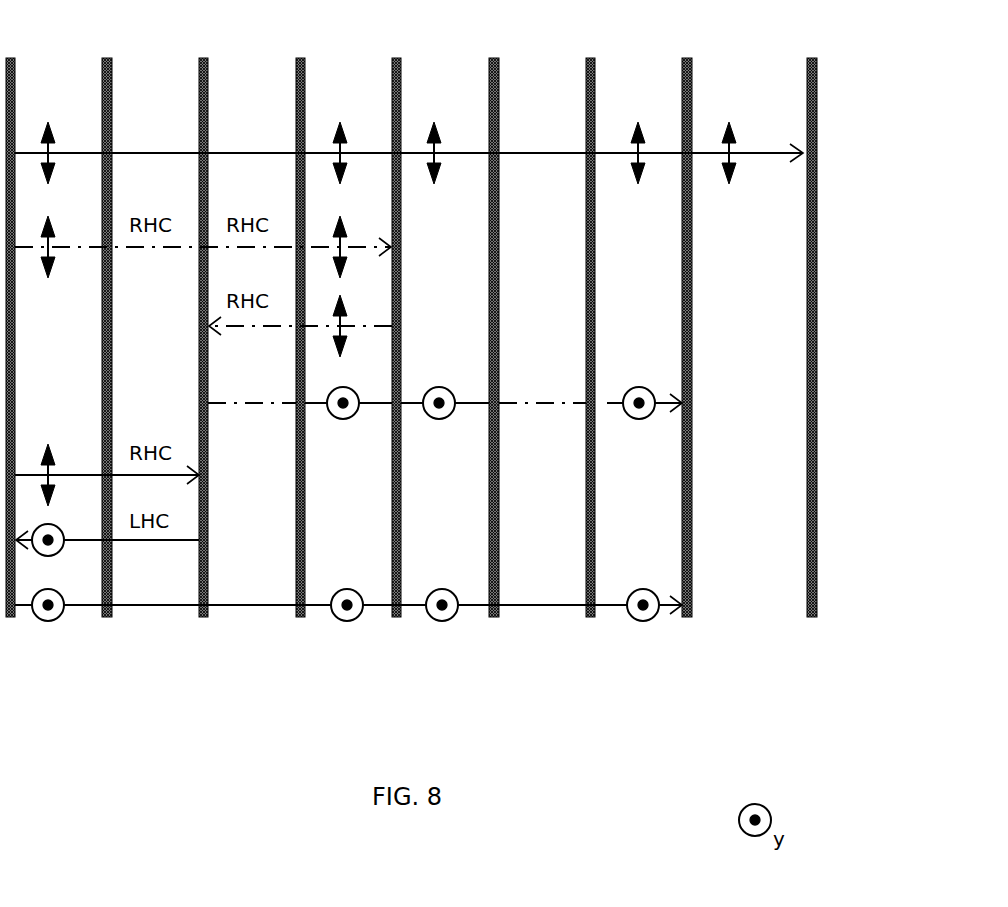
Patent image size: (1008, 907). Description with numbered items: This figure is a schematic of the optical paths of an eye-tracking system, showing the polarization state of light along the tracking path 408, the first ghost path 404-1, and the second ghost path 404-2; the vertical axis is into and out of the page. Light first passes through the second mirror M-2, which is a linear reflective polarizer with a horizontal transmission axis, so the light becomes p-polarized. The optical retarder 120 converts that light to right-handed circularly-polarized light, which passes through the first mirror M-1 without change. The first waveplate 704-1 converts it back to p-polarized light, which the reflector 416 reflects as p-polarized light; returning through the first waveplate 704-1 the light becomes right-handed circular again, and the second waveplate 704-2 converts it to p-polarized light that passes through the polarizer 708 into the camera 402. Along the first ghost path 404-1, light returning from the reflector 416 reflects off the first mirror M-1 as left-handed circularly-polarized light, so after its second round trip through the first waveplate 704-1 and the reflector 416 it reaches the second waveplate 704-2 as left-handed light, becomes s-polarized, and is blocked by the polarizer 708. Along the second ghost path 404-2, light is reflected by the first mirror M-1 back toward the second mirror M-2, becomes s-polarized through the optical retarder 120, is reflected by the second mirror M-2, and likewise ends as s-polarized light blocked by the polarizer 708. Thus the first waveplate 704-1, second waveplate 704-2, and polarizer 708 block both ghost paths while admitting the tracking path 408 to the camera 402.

The second mirror M-2 is at (14, 60).
The first mirror M-1 is at (206, 60).
The optical retarder 120 is at (108, 617).
The first waveplate 704-1 is at (302, 617).
The reflector 416 is at (399, 60).
The second waveplate 704-2 is at (593, 60).
The polarizer 708 is at (690, 617).
The camera 402 is at (815, 65).
The tracking path 408 is at (738, 155).
The first ghost path 404-1 is at (612, 404).
The second ghost path 404-2 is at (543, 606).